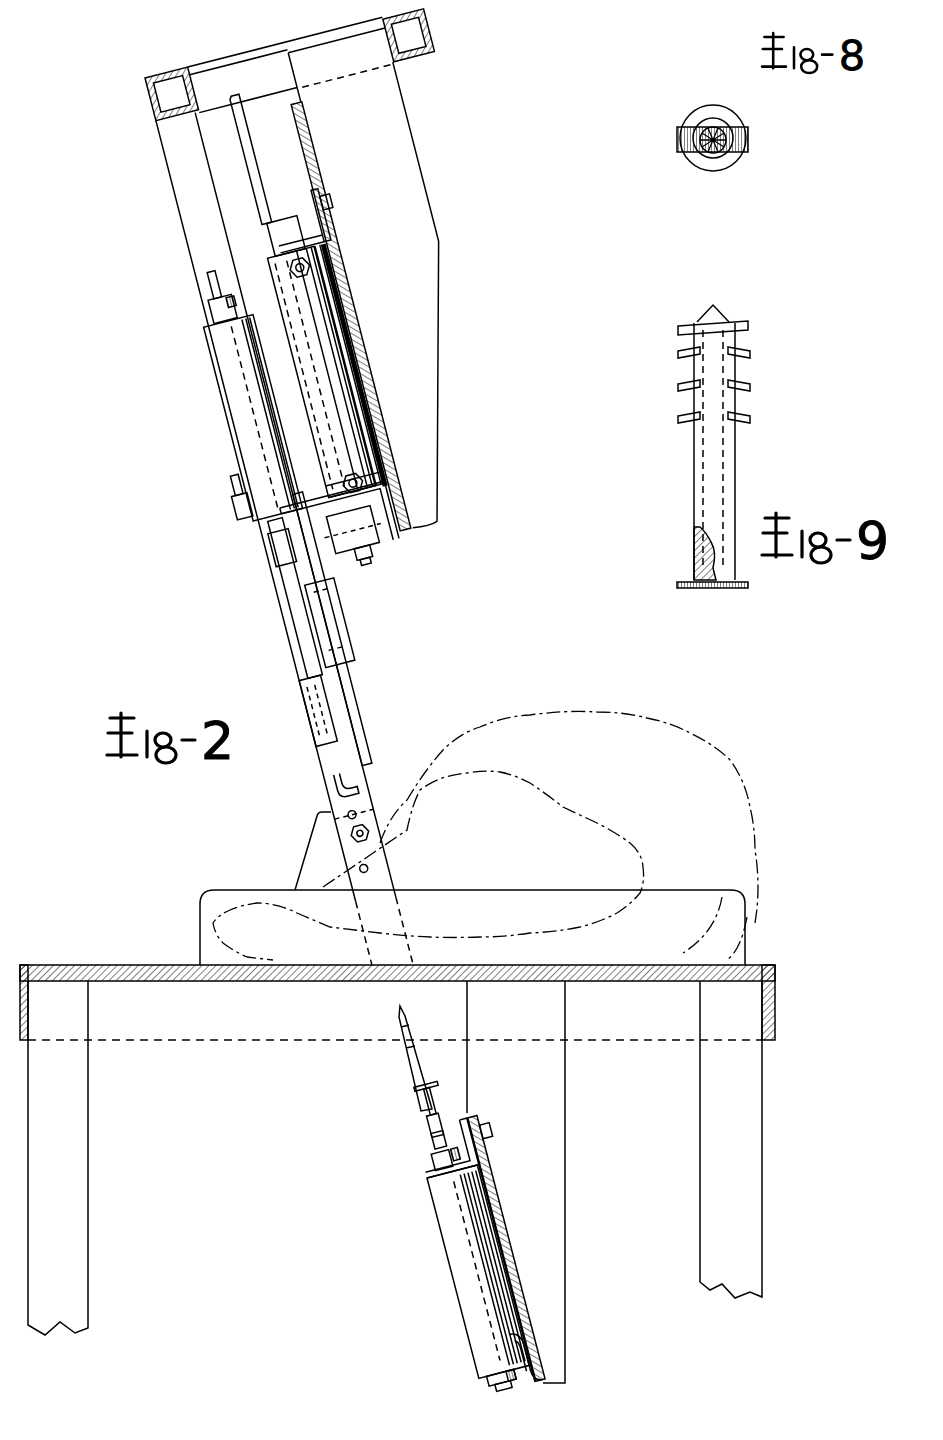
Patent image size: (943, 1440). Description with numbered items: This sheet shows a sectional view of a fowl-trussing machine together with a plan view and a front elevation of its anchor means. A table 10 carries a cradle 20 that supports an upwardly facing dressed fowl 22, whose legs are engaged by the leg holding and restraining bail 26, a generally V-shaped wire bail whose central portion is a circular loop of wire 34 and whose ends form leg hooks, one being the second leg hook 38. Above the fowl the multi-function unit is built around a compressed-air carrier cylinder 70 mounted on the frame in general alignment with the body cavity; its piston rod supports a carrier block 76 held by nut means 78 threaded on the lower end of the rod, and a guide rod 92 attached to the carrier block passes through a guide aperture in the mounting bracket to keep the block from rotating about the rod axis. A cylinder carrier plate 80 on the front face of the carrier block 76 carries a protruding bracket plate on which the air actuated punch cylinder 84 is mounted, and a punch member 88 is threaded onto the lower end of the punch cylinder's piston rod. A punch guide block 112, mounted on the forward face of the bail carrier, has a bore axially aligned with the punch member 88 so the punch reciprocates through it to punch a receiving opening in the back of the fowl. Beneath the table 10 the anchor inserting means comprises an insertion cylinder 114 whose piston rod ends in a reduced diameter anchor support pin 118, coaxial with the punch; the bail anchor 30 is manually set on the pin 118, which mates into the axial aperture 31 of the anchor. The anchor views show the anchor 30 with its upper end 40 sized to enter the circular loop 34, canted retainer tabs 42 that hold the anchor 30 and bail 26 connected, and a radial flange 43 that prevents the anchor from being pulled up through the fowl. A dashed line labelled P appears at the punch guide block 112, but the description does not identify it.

In FIG. 2, the table 10 is at (72, 965).
In FIG. 2, the cradle 20 is at (472, 927).
In FIG. 2, the dressed fowl 22 is at (612, 713).
In FIG. 2, the leg holding and restraining bail 26 is at (355, 752).
In FIG. 2, the bail anchor means 30 is at (410, 1062).
In FIG. 8, the bail anchor means 30 is at (707, 152).
In FIG. 9, the bail anchor means 30 is at (682, 472).
In FIG. 9, the axial aperture 31 is at (706, 588).
In FIG. 2, the circular loop of wire 34 is at (338, 781).
In FIG. 2, the second leg hook 38 is at (342, 672).
In FIG. 9, the upper end 40 is at (727, 366).
In FIG. 8, the canted retainer tabs 42 is at (677, 140).
In FIG. 9, the canted retainer tabs 42 is at (742, 326).
In FIG. 8, the radial flange 43 is at (735, 165).
In FIG. 9, the radial flange 43 is at (752, 586).
In FIG. 2, the carrier cylinder 70 is at (340, 342).
In FIG. 2, the carrier block 76 is at (350, 550).
In FIG. 2, the nut means 78 is at (368, 550).
In FIG. 2, the cylinder carrier plate 80 is at (352, 622).
In FIG. 2, the punch cylinder 84 is at (236, 426).
In FIG. 2, the punch member 88 is at (293, 590).
In FIG. 2, the guide rod 92 is at (255, 143).
In FIG. 2, the punch guide block 112 is at (305, 684).
In FIG. 2, the insertion cylinder 114 is at (452, 1265).
In FIG. 2, the anchor support pin 118 is at (420, 1104).
In FIG. 2, the pin P is at (320, 700).